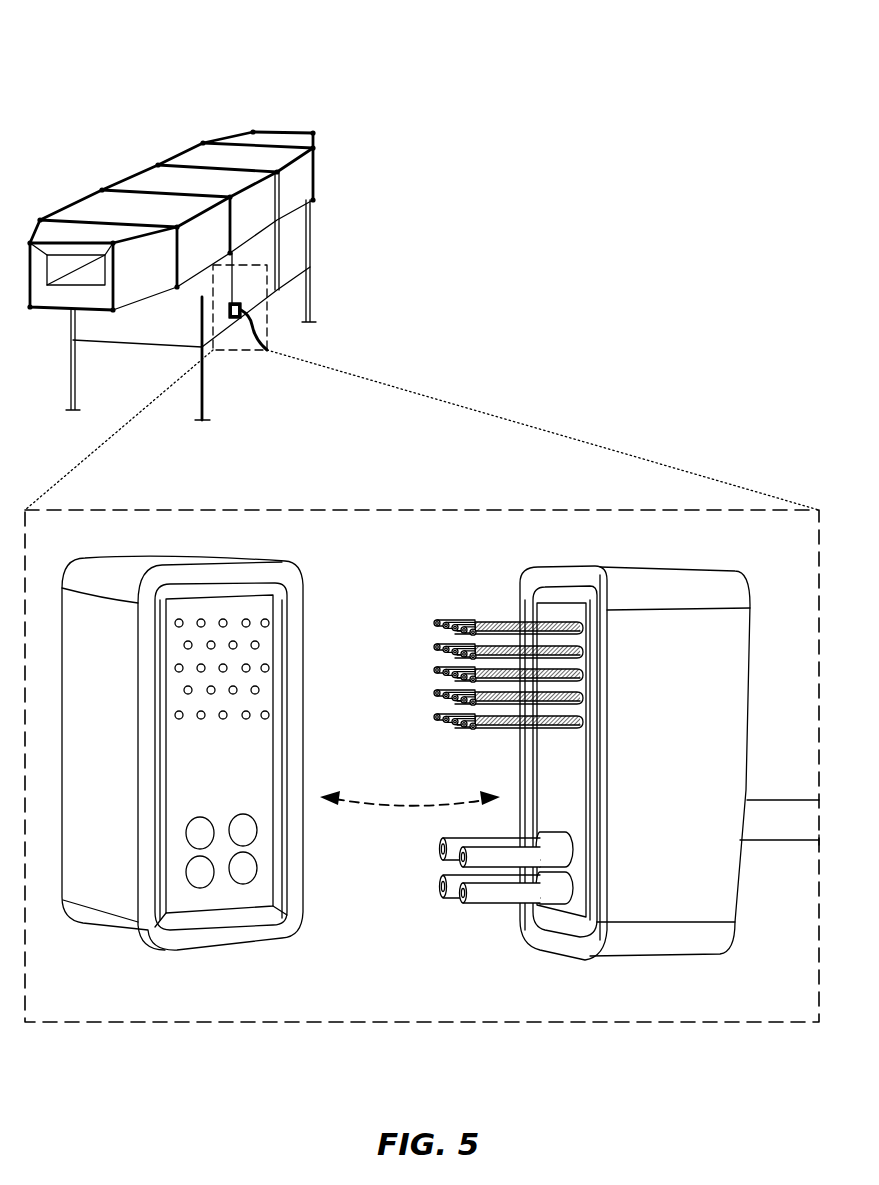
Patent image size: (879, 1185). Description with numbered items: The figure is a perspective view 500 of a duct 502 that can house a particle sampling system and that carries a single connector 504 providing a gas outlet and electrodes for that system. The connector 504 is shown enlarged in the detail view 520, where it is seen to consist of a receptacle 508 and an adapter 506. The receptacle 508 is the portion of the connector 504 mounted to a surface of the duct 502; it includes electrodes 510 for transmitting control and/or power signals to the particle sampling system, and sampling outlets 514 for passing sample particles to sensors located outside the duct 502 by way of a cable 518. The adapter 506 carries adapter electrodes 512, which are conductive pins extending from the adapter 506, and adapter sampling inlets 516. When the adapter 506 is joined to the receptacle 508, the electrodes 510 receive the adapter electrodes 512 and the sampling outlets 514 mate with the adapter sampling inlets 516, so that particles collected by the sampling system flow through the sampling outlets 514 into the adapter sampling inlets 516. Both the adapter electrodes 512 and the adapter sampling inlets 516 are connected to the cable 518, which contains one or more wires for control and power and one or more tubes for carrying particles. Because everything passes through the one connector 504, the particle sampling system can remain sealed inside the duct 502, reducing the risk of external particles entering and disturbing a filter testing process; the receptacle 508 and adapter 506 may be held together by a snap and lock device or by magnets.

The perspective view 500 is at (117, 72).
The duct 502 is at (135, 177).
The connector 504 is at (242, 310).
The adapter 506 is at (525, 573).
The receptacle 508 is at (307, 595).
The electrodes 510 is at (258, 688).
The adapter electrodes 512 is at (450, 722).
The sampling outlets 514 is at (258, 866).
The adapter sampling inlets 516 is at (440, 895).
The cable 518 is at (770, 842).
The view 520 is at (283, 508).